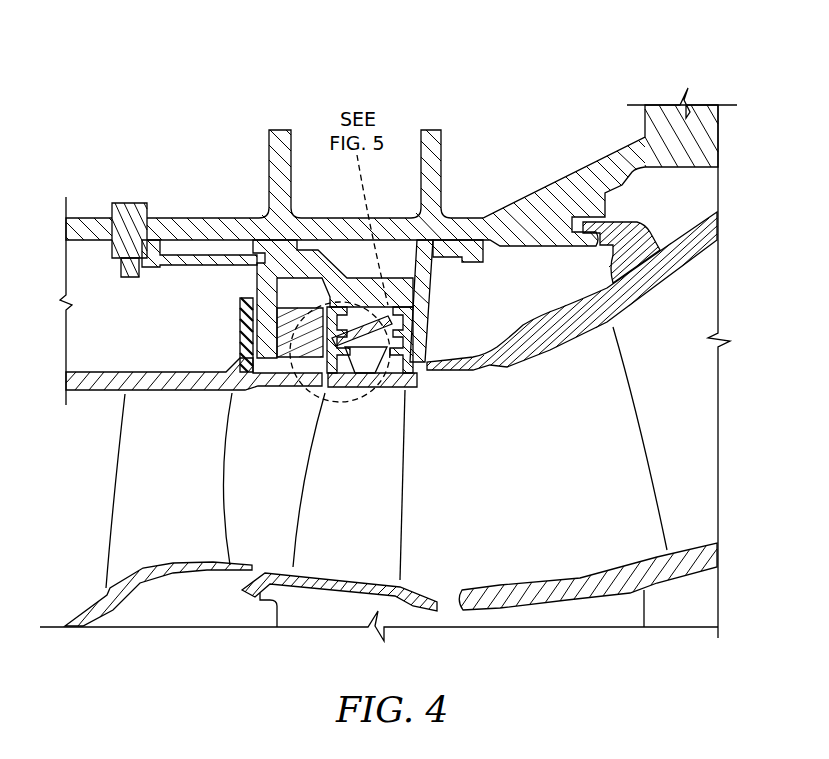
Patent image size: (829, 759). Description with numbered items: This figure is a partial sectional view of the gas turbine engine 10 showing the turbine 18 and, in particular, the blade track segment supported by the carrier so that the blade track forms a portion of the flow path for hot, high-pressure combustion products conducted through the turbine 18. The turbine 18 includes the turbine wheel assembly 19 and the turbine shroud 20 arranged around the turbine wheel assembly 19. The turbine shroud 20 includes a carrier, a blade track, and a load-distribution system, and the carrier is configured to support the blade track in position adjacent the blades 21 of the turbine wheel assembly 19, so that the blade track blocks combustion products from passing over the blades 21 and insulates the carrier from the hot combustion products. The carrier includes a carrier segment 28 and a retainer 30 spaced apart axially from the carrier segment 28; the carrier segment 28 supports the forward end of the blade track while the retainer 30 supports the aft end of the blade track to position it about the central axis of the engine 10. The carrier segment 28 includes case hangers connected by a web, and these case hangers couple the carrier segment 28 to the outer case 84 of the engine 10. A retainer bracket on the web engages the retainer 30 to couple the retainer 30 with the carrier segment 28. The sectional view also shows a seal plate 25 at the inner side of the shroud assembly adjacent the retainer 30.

The gas turbine engine 10 is at (130, 123).
The turbine 18 is at (465, 205).
The outer case 84 is at (247, 213).
The carrier segment 28 is at (320, 337).
The retainer 30 is at (428, 343).
The seal plate 25 is at (428, 382).
The turbine shroud 20 is at (312, 373).
The blades 21 is at (383, 528).
The turbine wheel assembly 19 is at (258, 615).